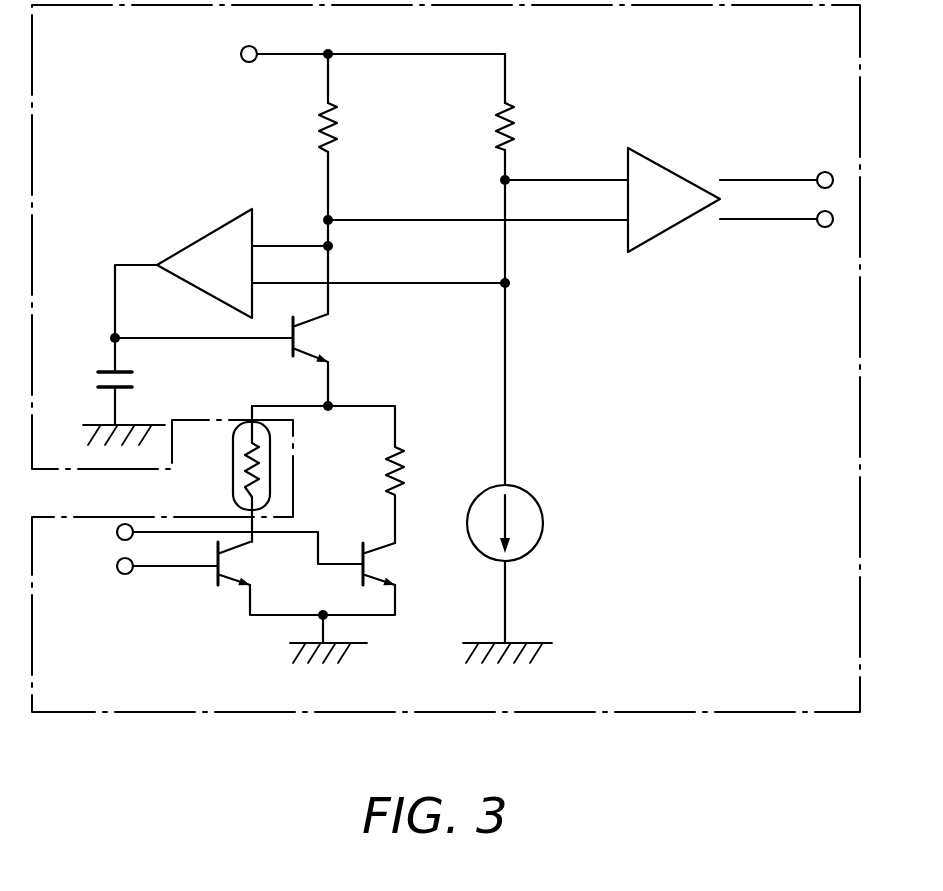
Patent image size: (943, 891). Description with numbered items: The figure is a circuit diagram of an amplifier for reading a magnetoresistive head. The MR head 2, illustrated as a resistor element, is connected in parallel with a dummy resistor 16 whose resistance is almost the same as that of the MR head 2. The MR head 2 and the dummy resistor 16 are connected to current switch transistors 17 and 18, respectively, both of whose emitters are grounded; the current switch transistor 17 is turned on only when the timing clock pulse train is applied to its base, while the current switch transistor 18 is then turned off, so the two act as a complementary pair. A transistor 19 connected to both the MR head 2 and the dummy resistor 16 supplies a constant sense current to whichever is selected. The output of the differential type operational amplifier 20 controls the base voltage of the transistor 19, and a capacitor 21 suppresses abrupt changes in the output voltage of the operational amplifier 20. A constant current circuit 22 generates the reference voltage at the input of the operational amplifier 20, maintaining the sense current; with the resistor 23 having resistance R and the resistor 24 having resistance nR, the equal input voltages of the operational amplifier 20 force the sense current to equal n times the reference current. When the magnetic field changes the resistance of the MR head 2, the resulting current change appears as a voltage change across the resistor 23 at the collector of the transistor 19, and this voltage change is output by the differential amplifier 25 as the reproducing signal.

The MR head 2 is at (233, 490).
The dummy resistor 16 is at (398, 453).
The current switch transistor 17 is at (205, 578).
The current switch transistor 18 is at (350, 536).
The transistor 19 is at (348, 326).
The differential type operational amplifier 20 is at (193, 242).
The capacitor 21 is at (146, 374).
The constant current circuit 22 is at (545, 515).
The resistor 23 is at (333, 108).
The resistor 24 is at (508, 105).
The differential amplifier 25 is at (660, 163).